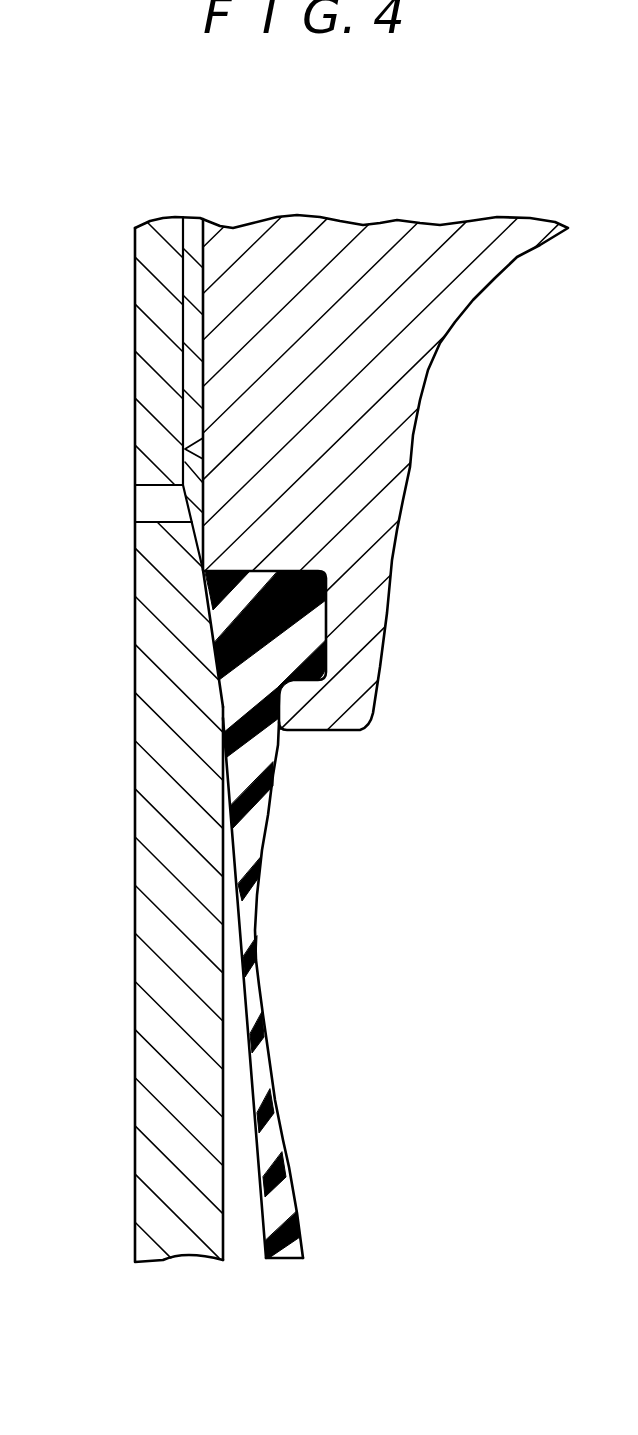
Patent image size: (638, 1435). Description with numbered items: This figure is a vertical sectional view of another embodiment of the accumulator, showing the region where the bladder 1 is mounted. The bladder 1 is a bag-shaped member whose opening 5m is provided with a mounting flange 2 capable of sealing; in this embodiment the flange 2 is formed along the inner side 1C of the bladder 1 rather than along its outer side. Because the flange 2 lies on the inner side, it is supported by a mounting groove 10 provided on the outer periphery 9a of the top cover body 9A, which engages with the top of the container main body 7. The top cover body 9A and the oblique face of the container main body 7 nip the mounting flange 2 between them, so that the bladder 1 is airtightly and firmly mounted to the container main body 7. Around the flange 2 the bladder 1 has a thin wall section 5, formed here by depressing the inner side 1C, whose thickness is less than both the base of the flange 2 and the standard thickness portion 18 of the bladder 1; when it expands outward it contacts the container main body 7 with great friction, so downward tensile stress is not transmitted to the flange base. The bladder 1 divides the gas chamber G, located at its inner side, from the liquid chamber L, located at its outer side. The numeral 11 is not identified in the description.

The top cover body 9A is at (333, 250).
The outer periphery of top cover body 9a is at (195, 473).
The mounting flange 2 is at (312, 615).
The mounting groove 10 is at (328, 658).
The cylinder body wall 11 is at (217, 648).
The opening of bladder 5m is at (238, 717).
The inner side of bladder 1C is at (272, 812).
The thin wall section 5 is at (253, 975).
The gas chamber G is at (483, 973).
The liquid chamber L is at (238, 1093).
The container main body 7 is at (153, 1148).
The standard thickness portion 18 is at (250, 1221).
The bladder 1 is at (292, 1258).